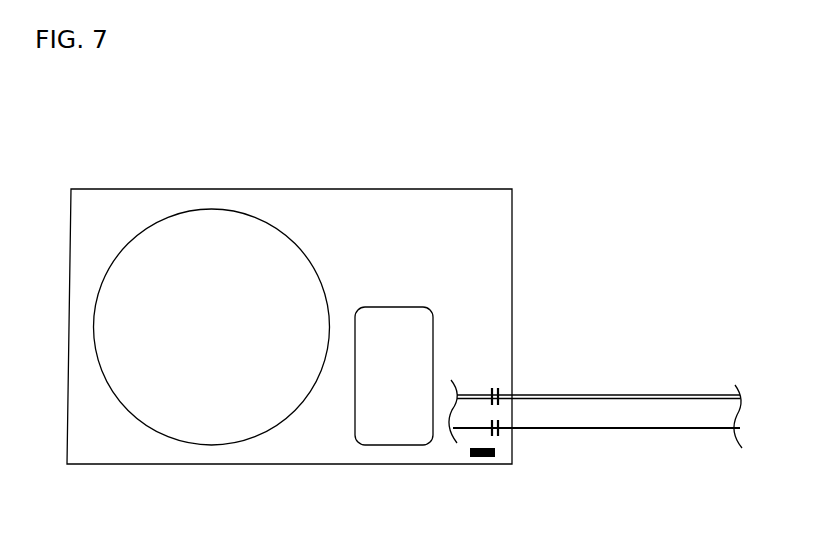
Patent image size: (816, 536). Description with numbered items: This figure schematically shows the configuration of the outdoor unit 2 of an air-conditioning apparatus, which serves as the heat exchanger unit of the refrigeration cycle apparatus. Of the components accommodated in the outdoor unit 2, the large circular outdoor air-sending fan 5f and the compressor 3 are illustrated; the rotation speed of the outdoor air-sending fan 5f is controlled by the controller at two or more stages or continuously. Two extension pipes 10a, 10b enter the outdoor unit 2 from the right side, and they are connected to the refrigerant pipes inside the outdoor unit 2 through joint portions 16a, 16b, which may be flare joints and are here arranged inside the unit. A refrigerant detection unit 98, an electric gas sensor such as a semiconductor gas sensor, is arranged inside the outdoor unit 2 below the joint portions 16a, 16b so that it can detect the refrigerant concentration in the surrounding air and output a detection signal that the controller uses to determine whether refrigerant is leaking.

The outdoor unit 2 is at (380, 176).
The outdoor air-sending fan 5f is at (220, 209).
The compressor 3 is at (434, 331).
The extension pipe 10a is at (625, 394).
The extension pipe 10b is at (622, 431).
The joint portion 16a is at (502, 392).
The joint portion 16b is at (503, 433).
The refrigerant detection unit 98 is at (483, 458).